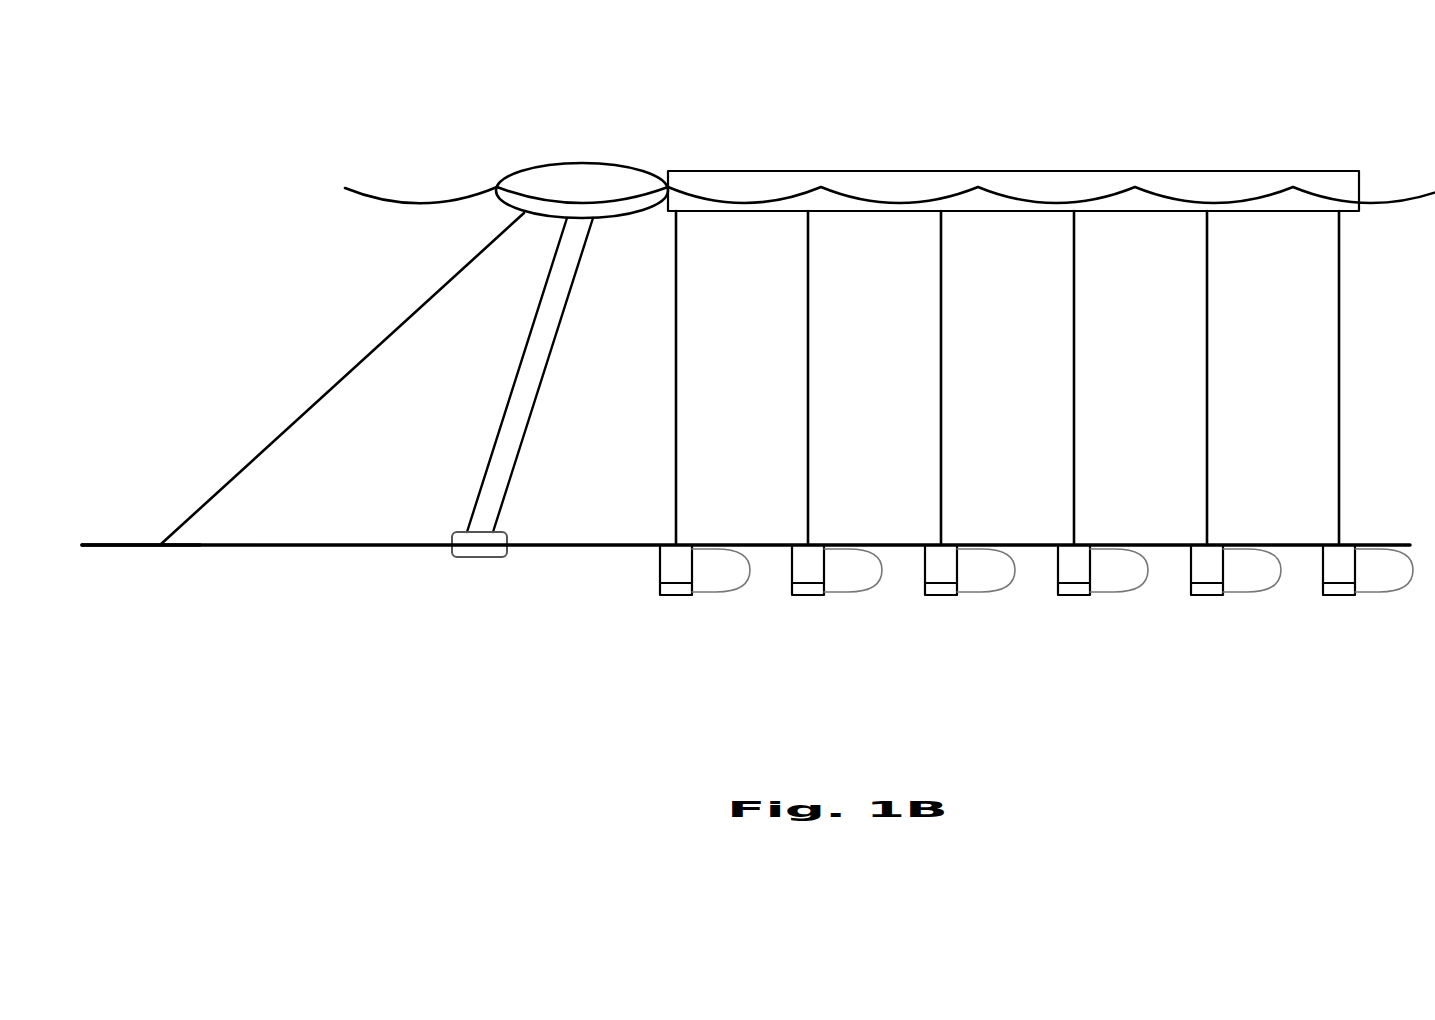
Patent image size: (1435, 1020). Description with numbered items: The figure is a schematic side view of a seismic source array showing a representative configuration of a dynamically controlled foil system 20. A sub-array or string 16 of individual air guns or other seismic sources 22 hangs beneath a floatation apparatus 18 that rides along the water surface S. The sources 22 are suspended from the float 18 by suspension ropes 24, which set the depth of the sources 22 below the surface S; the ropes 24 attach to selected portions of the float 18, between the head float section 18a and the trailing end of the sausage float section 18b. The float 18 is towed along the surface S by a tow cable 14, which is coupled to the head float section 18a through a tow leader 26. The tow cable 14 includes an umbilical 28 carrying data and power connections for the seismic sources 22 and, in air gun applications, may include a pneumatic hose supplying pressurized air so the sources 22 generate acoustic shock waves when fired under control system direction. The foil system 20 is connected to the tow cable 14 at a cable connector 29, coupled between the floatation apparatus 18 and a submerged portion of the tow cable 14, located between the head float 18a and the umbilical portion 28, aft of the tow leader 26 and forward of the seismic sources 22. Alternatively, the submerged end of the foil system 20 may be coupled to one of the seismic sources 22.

The tow cable 14 is at (125, 543).
The sub-array or string 16 is at (759, 338).
The floatation apparatus 18 is at (927, 129).
The head float section 18a is at (610, 163).
The sausage float section 18b is at (1177, 171).
The dynamically controlled foil system 20 is at (505, 432).
The seismic sources 22 is at (660, 593).
The suspension ropes 24 is at (1075, 370).
The tow leader 26 is at (316, 400).
The umbilical 28 is at (330, 547).
The cable connector 29 is at (460, 556).
The surface S is at (438, 200).